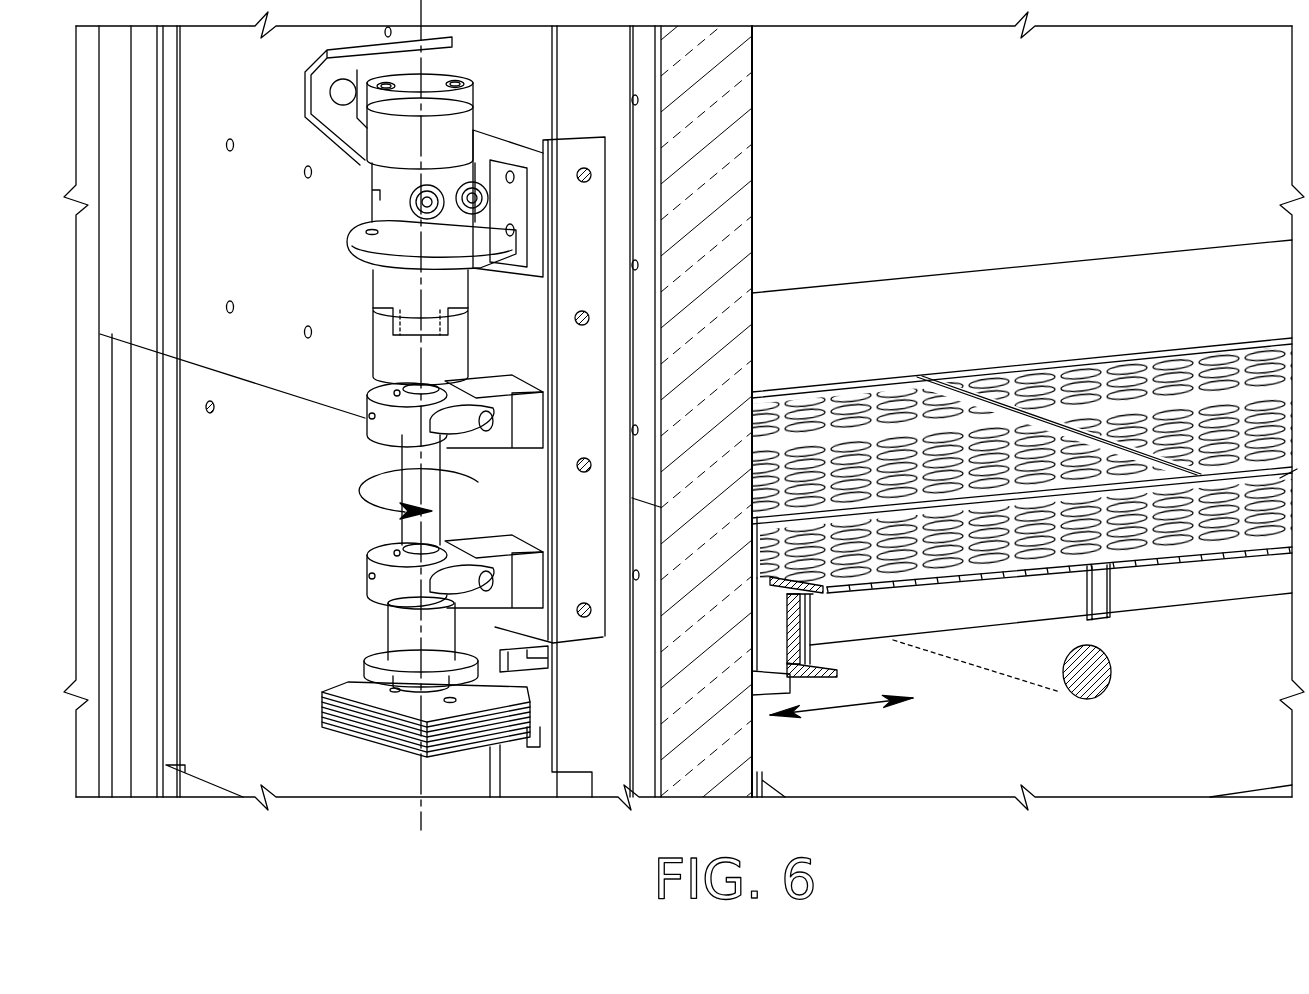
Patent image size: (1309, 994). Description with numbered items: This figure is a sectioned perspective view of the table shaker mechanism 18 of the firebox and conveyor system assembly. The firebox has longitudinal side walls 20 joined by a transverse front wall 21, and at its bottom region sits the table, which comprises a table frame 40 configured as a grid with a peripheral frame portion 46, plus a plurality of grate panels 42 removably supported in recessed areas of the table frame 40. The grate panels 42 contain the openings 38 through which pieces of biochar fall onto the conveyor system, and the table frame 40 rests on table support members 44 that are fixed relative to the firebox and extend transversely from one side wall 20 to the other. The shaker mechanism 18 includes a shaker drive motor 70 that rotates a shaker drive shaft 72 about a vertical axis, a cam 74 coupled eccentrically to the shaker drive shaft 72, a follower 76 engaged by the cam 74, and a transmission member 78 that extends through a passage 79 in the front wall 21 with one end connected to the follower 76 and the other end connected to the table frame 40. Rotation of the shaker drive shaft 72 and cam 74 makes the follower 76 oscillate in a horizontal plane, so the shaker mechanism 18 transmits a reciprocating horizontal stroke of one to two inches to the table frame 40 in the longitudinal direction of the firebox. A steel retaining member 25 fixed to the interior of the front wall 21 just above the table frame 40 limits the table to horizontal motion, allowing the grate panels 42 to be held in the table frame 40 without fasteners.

The shaker mechanism 18 is at (325, 297).
The longitudinal side wall 20 is at (1014, 157).
The front wall 21 is at (753, 110).
The retaining member 25 is at (813, 592).
The openings 38 is at (1097, 373).
The table frame 40 is at (1022, 680).
The grate panel 42 is at (1024, 465).
The table support member 44 is at (1053, 677).
The peripheral frame portion 46 is at (837, 658).
The shaker drive motor 70 is at (447, 127).
The shaker drive shaft 72 is at (437, 483).
The cam 74 is at (400, 705).
The follower 76 is at (395, 730).
The transmission member 78 is at (544, 704).
The passage 79 is at (523, 672).